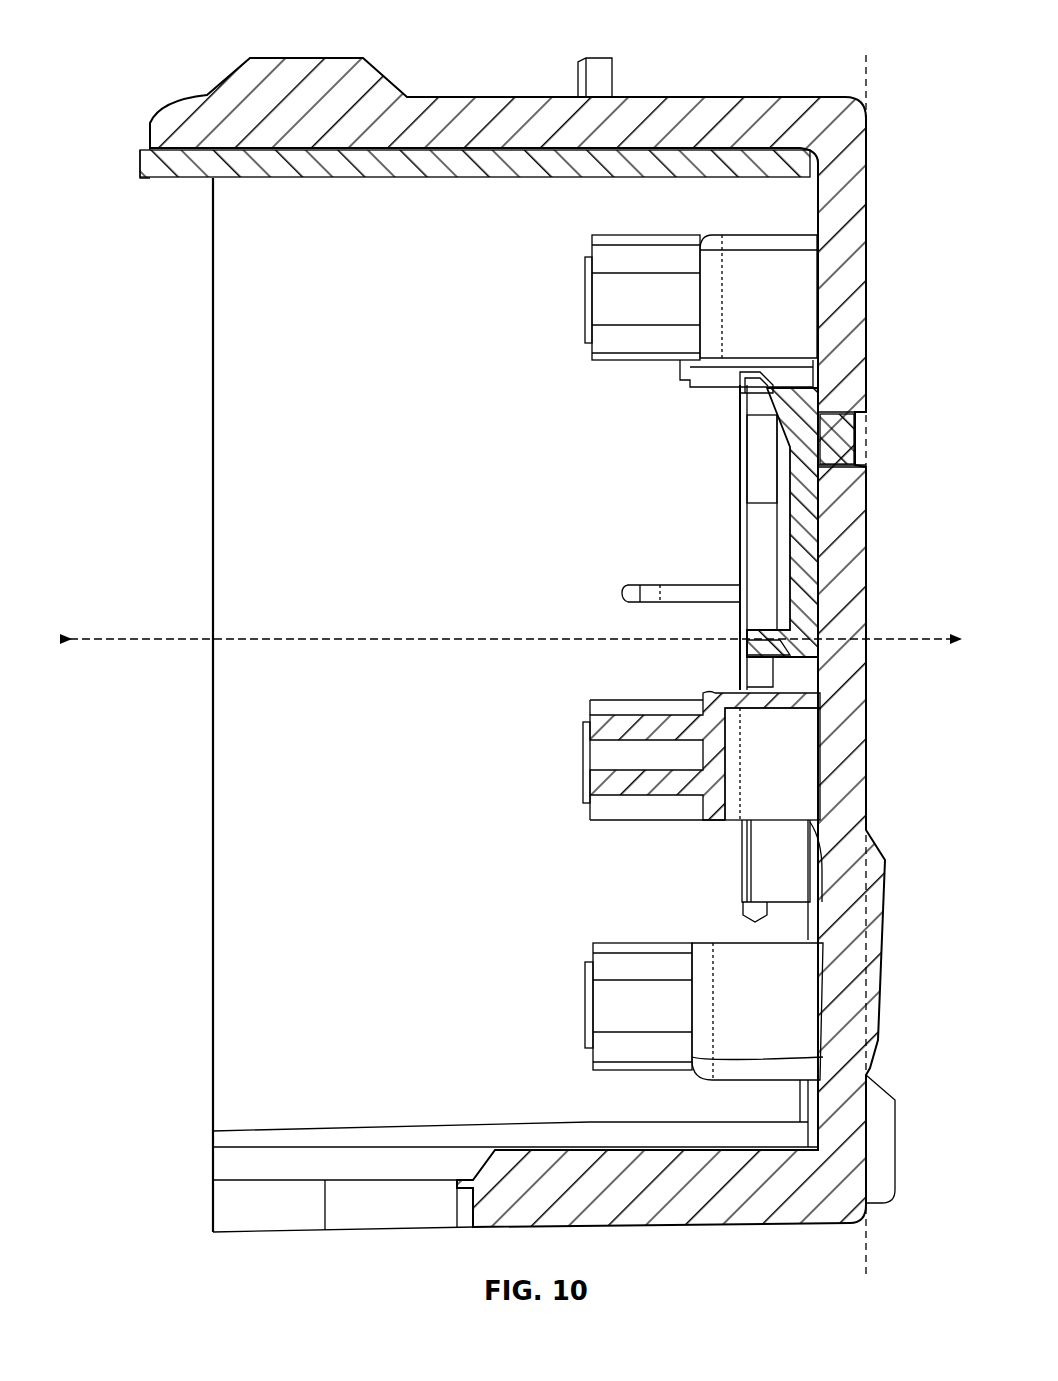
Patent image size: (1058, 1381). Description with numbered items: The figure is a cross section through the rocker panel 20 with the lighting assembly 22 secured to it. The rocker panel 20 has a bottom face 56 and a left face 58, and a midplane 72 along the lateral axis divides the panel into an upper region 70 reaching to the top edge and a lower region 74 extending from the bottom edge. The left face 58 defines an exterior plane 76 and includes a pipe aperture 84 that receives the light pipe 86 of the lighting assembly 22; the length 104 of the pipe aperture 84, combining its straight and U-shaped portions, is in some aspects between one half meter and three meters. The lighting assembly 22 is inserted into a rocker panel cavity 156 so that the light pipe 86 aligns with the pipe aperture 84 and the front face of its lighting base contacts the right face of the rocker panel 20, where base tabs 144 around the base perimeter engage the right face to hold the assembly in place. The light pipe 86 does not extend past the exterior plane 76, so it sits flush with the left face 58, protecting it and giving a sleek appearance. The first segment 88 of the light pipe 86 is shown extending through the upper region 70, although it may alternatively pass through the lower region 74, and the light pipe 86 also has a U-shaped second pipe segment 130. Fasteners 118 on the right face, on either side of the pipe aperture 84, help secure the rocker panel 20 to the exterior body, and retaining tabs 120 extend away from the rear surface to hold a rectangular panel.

The rocker panel 20 is at (132, 48).
The lighting assembly 22 is at (683, 430).
The bottom face 56 is at (830, 920).
The left face 58 is at (866, 205).
The upper region 70 is at (178, 322).
The midplane 72 is at (108, 641).
The lower region 74 is at (133, 867).
The exterior plane 76 is at (866, 68).
The pipe aperture 84 is at (880, 457).
The light pipe 86 is at (868, 422).
The first segment 88 is at (760, 484).
The length of the pipe aperture 104 is at (820, 480).
The fasteners 118 is at (612, 297).
The retaining tabs 120 is at (663, 584).
The second pipe segment 130 is at (765, 877).
The base tabs 144 is at (740, 397).
The rocker panel cavity 156 is at (264, 445).